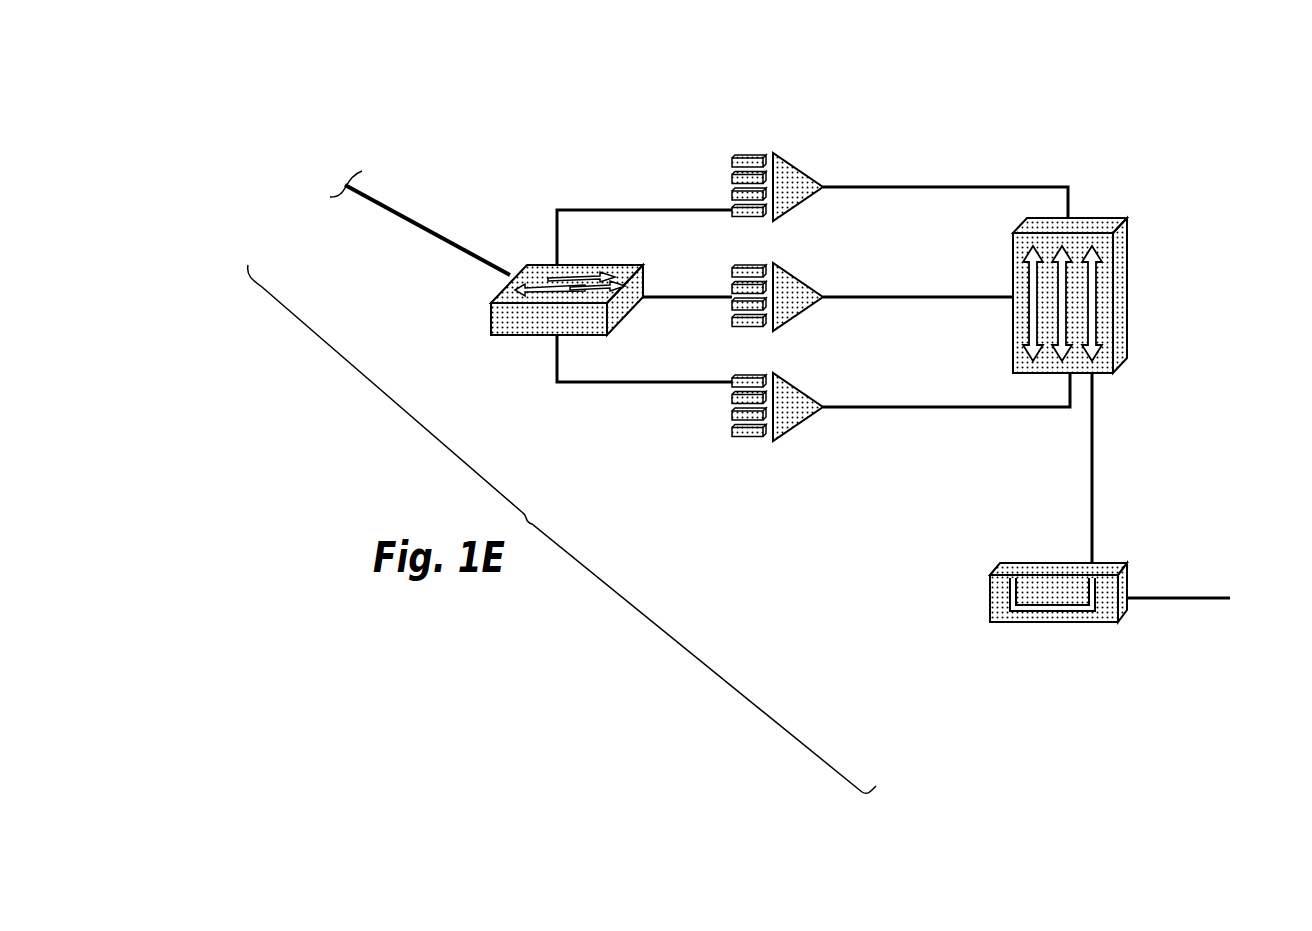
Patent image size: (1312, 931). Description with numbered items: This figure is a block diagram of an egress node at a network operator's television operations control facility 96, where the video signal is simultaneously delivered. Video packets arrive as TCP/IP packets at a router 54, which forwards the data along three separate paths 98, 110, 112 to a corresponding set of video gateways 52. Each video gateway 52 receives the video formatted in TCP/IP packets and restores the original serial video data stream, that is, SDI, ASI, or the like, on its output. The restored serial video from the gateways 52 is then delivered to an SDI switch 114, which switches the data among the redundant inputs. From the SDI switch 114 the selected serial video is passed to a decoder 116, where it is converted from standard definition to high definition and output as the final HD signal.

The television operations control facility 96 is at (1062, 146).
The router 54 is at (527, 262).
The path 98 is at (610, 210).
The path 110 is at (712, 300).
The path 112 is at (660, 385).
The video gateway 52 is at (790, 165).
The SDI switch 114 is at (1127, 277).
The decoder 116 is at (997, 572).